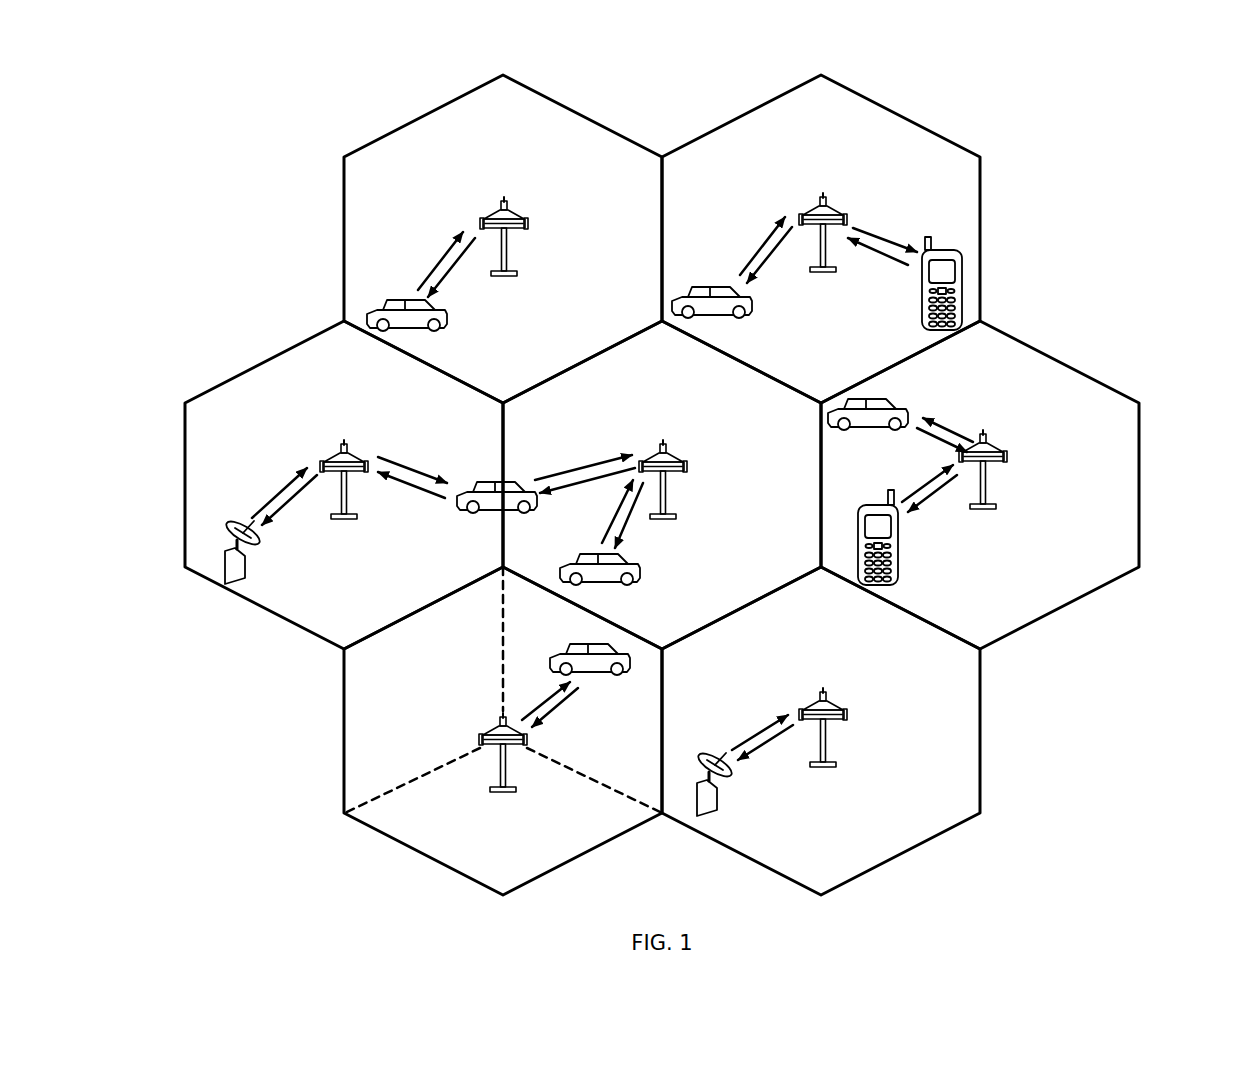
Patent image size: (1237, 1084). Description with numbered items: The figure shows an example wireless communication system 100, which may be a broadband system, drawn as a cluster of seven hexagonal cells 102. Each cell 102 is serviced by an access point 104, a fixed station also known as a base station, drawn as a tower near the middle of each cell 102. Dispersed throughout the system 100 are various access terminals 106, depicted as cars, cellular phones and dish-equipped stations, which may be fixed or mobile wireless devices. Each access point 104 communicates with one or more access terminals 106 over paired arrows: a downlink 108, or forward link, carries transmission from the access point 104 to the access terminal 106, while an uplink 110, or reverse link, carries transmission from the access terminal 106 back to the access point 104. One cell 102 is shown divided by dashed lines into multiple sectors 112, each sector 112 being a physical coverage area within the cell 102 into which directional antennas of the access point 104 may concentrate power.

The wireless communication system 100 is at (1170, 128).
The cell 102 is at (430, 113).
The access point 104 is at (504, 197).
The access terminal 106 is at (447, 323).
The downlink 108 is at (447, 273).
The uplink 110 is at (440, 264).
The sector 112 is at (560, 853).